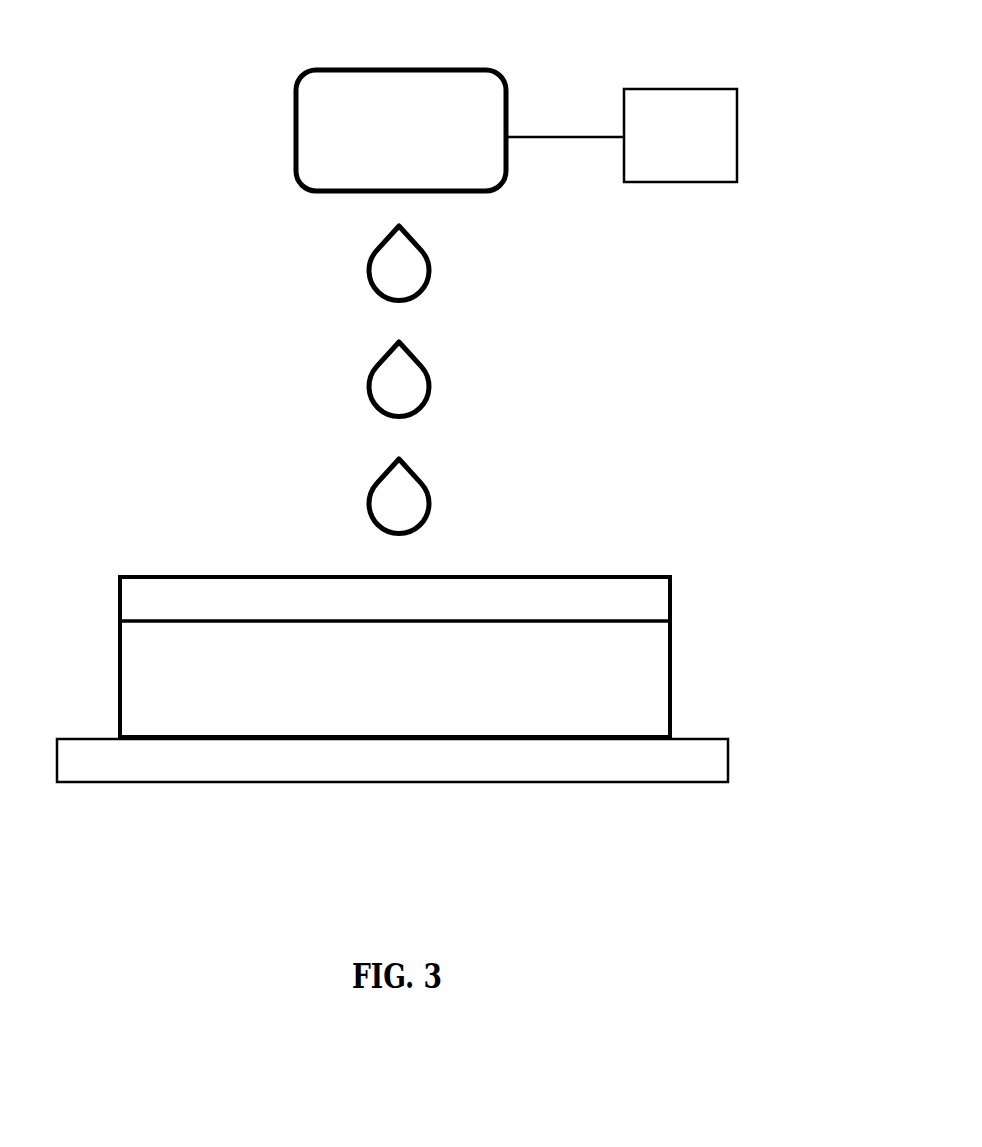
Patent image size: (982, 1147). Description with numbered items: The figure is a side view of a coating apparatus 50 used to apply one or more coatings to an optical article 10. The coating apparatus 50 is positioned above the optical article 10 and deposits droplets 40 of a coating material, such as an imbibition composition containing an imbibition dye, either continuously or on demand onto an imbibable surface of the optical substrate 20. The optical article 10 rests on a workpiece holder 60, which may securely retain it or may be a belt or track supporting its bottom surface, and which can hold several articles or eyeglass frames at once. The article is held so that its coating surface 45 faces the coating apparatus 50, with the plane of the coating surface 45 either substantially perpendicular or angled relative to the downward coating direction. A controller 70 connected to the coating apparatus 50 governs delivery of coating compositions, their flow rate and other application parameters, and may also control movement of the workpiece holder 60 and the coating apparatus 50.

The optical article 10 is at (703, 530).
The optical substrate 20 is at (647, 671).
The droplets 40 is at (408, 503).
The coating surface 45 is at (672, 622).
The coating apparatus 50 is at (374, 92).
The workpiece holder 60 is at (670, 763).
The controller 70 is at (722, 133).